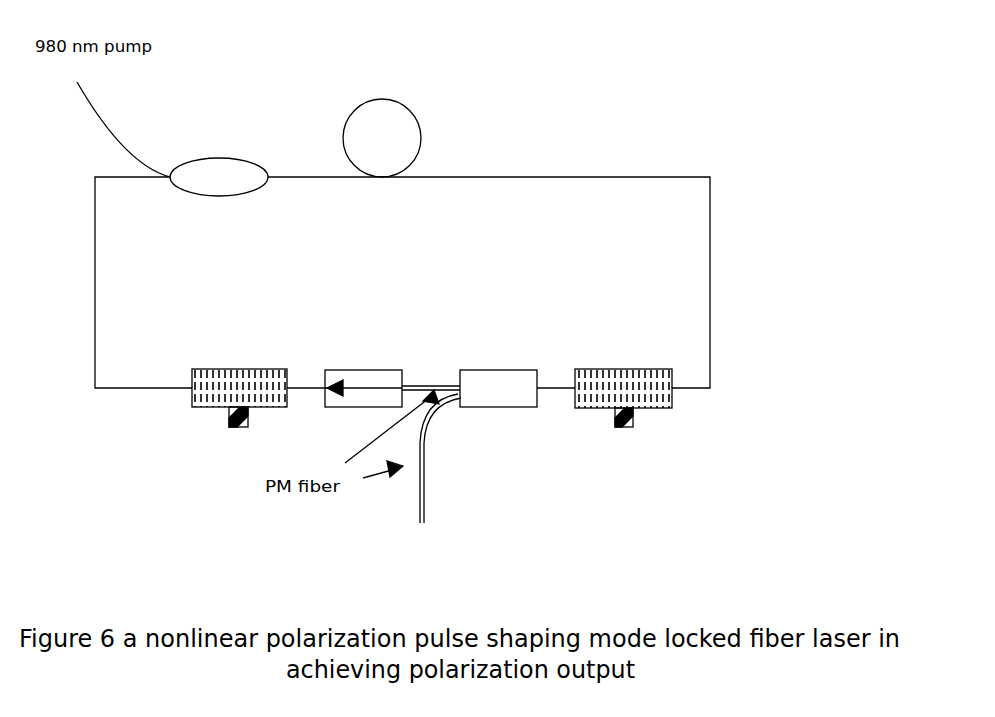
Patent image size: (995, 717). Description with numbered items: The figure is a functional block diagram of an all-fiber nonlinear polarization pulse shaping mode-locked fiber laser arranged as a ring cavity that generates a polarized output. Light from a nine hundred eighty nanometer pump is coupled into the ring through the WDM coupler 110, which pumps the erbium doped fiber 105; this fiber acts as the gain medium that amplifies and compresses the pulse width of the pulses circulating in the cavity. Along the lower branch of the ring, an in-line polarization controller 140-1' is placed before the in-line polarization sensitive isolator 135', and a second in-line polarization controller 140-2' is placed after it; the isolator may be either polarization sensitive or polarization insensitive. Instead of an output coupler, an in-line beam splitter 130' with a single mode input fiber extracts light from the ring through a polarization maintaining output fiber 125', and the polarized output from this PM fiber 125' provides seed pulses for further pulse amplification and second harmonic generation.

The 980/1550 WDM coupler 110 is at (207, 168).
The erbium doped fiber 105 is at (384, 117).
The in-line polarization sensitive isolator 135' is at (356, 332).
The in-line beam splitter 130' is at (494, 331).
The polarization maintaining output fiber 125' is at (411, 481).
The in-line polarization controller 140-1' is at (190, 438).
The in-line polarization controller 140-2' is at (616, 438).